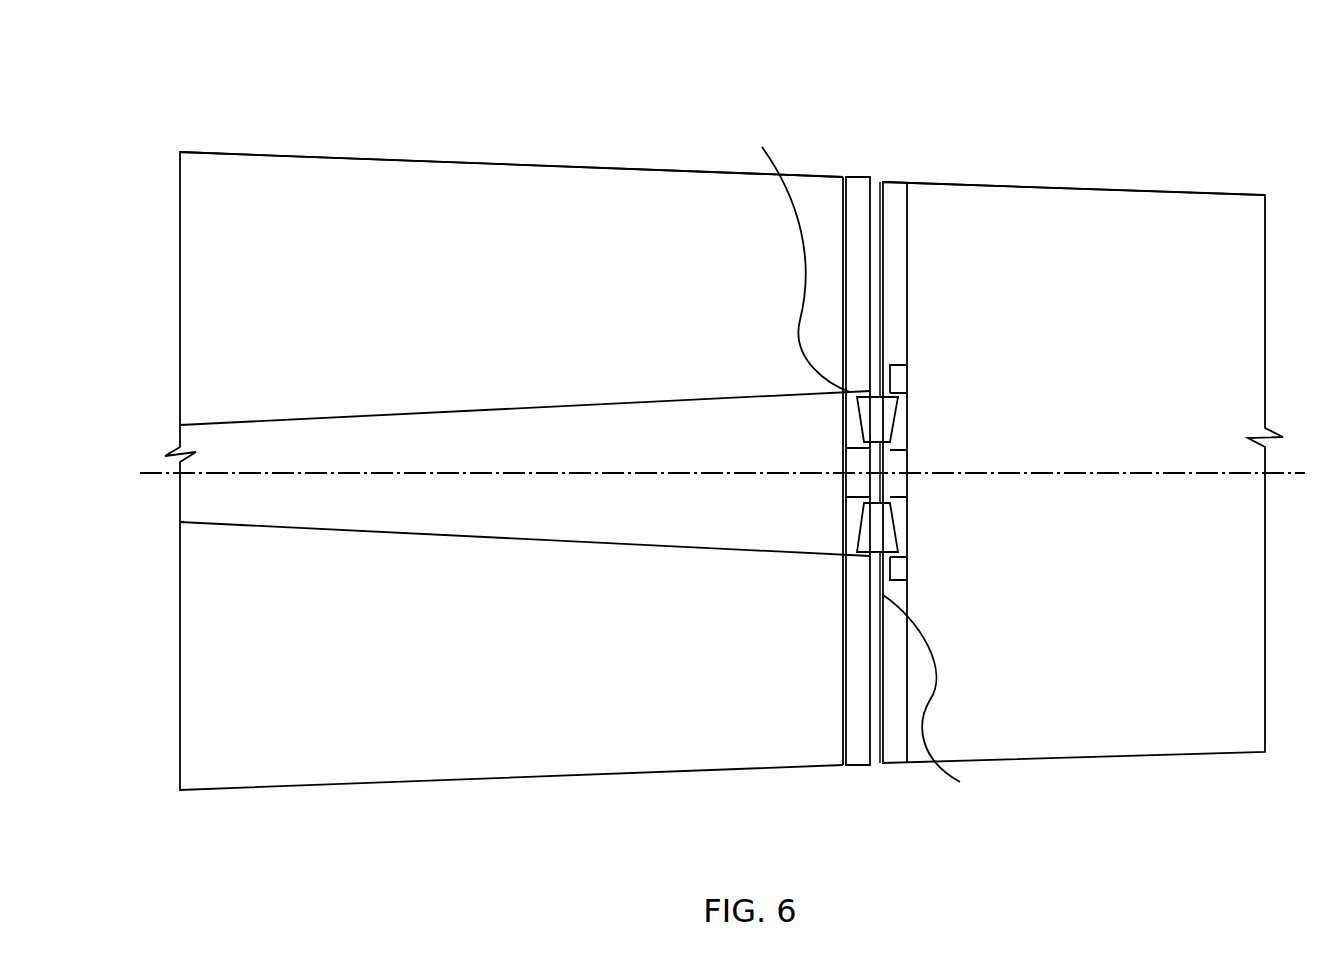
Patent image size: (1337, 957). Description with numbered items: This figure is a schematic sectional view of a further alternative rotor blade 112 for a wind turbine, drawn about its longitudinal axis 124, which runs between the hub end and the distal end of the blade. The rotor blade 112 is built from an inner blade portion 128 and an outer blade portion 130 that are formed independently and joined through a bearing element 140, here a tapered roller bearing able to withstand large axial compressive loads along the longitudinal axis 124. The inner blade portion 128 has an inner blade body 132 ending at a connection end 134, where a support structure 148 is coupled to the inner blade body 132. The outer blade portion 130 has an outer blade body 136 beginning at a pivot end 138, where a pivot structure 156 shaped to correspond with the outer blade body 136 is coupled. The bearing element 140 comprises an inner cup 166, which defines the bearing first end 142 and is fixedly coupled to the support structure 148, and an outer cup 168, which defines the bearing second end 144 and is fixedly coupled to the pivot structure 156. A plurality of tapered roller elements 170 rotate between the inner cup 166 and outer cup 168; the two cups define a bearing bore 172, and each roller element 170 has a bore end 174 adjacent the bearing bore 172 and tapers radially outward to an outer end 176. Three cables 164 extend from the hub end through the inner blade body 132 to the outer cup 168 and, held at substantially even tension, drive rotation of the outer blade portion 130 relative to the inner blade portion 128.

The rotor blade 112 is at (1172, 58).
The longitudinal axis 124 is at (173, 474).
The inner blade portion 128 is at (453, 160).
The outer blade portion 130 is at (1042, 178).
The inner blade body 132 is at (340, 152).
The connection end 134 is at (873, 183).
The outer blade body 136 is at (1066, 183).
The pivot end 138 is at (940, 694).
The bearing element 140 is at (925, 585).
The bearing first end 142 is at (788, 255).
The bearing second end 144 is at (907, 420).
The support structure 148 is at (858, 760).
The pivot structure 156 is at (892, 747).
The cables 164 is at (555, 407).
The inner cup 166 is at (868, 556).
The outer cup 168 is at (907, 365).
The tapered roller elements 170 is at (867, 418).
The bearing bore 172 is at (912, 480).
The bore end 174 is at (858, 525).
The outer end 176 is at (900, 372).